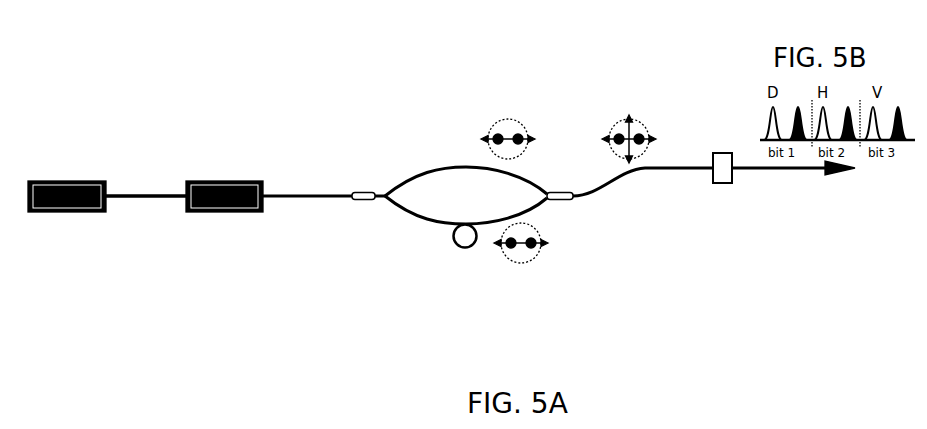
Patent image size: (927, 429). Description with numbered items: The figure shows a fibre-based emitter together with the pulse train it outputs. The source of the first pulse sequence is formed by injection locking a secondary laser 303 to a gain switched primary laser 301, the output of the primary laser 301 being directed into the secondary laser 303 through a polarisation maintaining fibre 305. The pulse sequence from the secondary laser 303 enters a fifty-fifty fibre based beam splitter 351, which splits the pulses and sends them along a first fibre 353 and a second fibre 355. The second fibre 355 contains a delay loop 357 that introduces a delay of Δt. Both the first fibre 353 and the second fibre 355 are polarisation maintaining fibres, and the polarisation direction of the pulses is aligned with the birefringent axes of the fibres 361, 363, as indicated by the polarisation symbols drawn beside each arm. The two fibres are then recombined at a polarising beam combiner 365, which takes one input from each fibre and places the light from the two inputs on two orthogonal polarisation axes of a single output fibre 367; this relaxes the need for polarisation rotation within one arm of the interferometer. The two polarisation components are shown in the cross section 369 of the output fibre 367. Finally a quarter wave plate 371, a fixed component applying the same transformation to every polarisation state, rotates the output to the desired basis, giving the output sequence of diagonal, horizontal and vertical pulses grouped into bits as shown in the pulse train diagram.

The primary laser 301 is at (68, 175).
The secondary laser 303 is at (224, 175).
The polarisation maintaining fibre 305 is at (135, 184).
The 50:50 fibre based beam splitter 351 is at (357, 200).
The first fibre 353 is at (426, 155).
The second fibre 355 is at (422, 236).
The delay loop 357 is at (468, 283).
The birefringent axes of the first fibre 361 is at (519, 124).
The birefringent axes of the second fibre 363 is at (538, 258).
The polarising beam combiner 365 is at (588, 206).
The output fibre 367 is at (679, 156).
The cross section of output fibre 369 is at (624, 100).
The quarter wave plate 371 is at (750, 187).